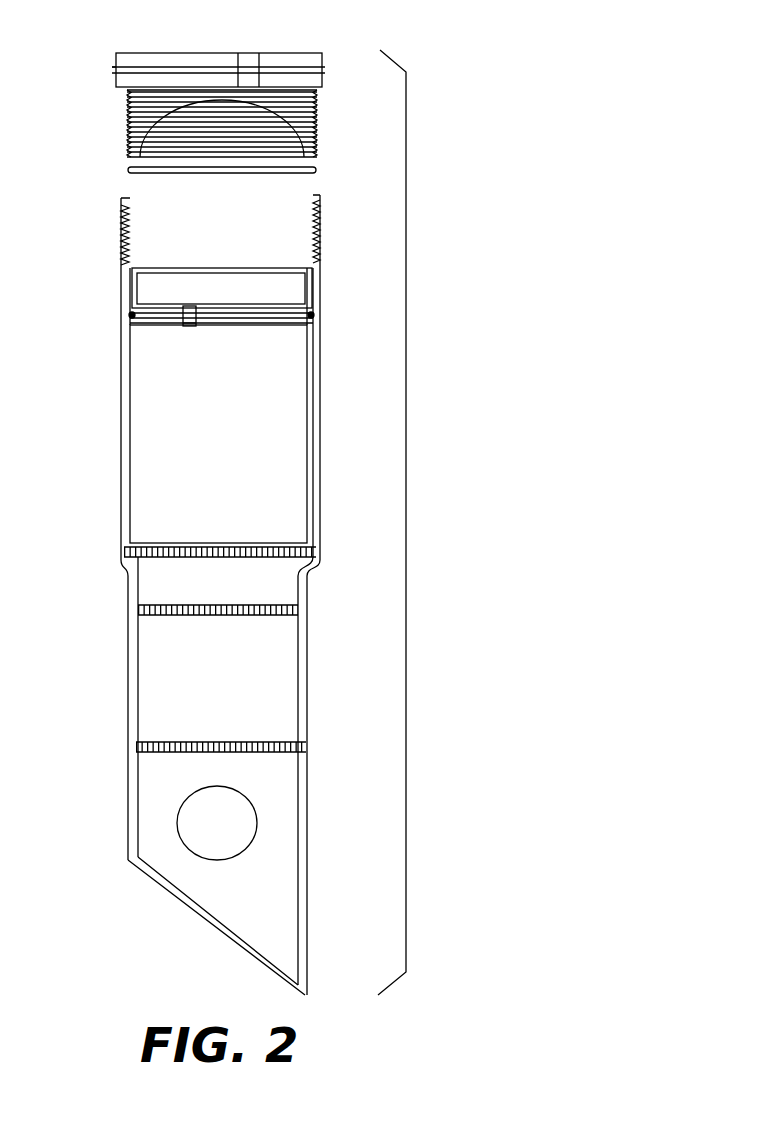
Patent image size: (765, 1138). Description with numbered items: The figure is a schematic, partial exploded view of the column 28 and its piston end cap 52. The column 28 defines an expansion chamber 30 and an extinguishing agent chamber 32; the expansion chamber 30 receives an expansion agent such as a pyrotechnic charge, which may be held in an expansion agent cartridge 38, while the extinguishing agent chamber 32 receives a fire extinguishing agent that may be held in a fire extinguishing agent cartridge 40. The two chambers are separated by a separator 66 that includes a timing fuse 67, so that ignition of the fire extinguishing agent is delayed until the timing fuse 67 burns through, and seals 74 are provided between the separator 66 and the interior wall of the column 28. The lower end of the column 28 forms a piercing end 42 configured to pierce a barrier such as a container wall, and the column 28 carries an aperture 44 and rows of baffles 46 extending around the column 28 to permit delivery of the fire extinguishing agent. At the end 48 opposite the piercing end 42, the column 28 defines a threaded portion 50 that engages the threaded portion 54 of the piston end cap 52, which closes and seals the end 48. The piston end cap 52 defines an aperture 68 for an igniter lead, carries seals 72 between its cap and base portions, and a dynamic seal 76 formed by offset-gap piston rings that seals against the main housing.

The column 28 is at (408, 405).
The expansion chamber 30 is at (282, 245).
The extinguishing agent chamber 32 is at (296, 397).
The expansion agent cartridge 38 is at (305, 292).
The fire extinguishing agent cartridge 40 is at (310, 478).
The piercing end 42 is at (196, 915).
The apertures 44 is at (257, 822).
The baffles 46 is at (316, 552).
The end 48 is at (322, 200).
The threaded portion 50 is at (125, 222).
The piston end cap 52 is at (322, 55).
The threaded portion 54 is at (128, 117).
The separator 66 is at (205, 323).
The timing fuse 67 is at (183, 323).
The aperture 68 is at (246, 53).
The seals 72 is at (128, 170).
The seals 74 is at (130, 315).
The dynamic seal 76 is at (116, 67).